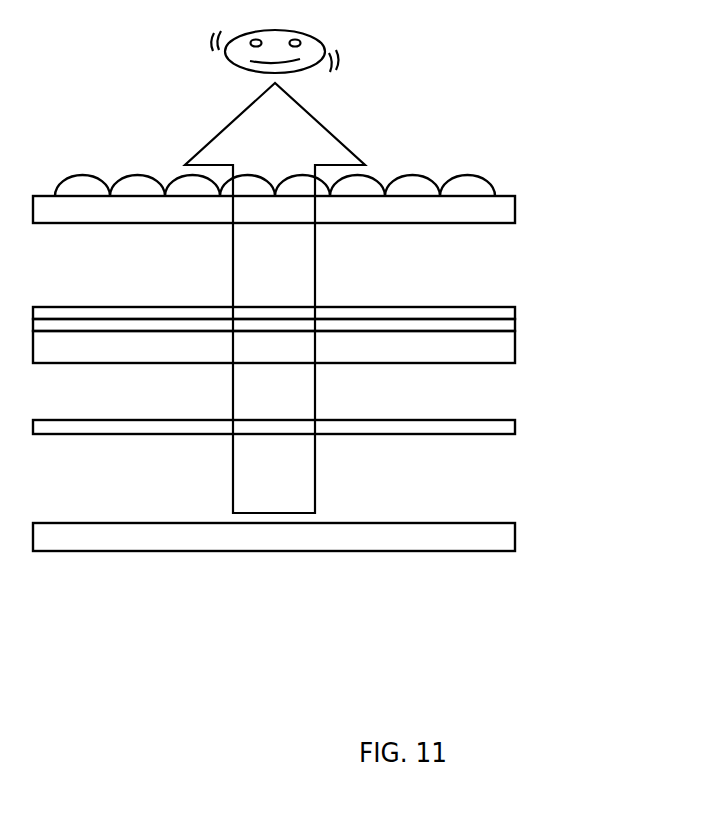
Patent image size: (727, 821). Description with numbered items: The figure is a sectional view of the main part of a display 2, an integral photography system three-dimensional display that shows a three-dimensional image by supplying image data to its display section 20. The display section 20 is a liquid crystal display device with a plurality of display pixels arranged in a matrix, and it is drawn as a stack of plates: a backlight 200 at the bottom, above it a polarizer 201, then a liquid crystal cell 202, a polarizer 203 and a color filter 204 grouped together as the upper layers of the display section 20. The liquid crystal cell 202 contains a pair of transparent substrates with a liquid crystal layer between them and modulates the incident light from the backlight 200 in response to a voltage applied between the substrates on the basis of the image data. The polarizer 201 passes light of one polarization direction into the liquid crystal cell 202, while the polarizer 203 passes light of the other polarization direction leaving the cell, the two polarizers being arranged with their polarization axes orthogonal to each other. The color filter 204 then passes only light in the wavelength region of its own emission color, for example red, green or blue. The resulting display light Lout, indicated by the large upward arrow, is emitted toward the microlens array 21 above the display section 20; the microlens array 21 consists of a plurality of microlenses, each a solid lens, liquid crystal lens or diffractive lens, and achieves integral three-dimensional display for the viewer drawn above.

The display 2 is at (551, 598).
The display section 20 is at (596, 287).
The backlight 200 is at (511, 537).
The polarizer 201 is at (513, 427).
The liquid crystal cell 202 is at (510, 346).
The polarizer 203 is at (510, 325).
The color filter 204 is at (515, 307).
The microlens array 21 is at (527, 213).
The display light Lout is at (318, 121).